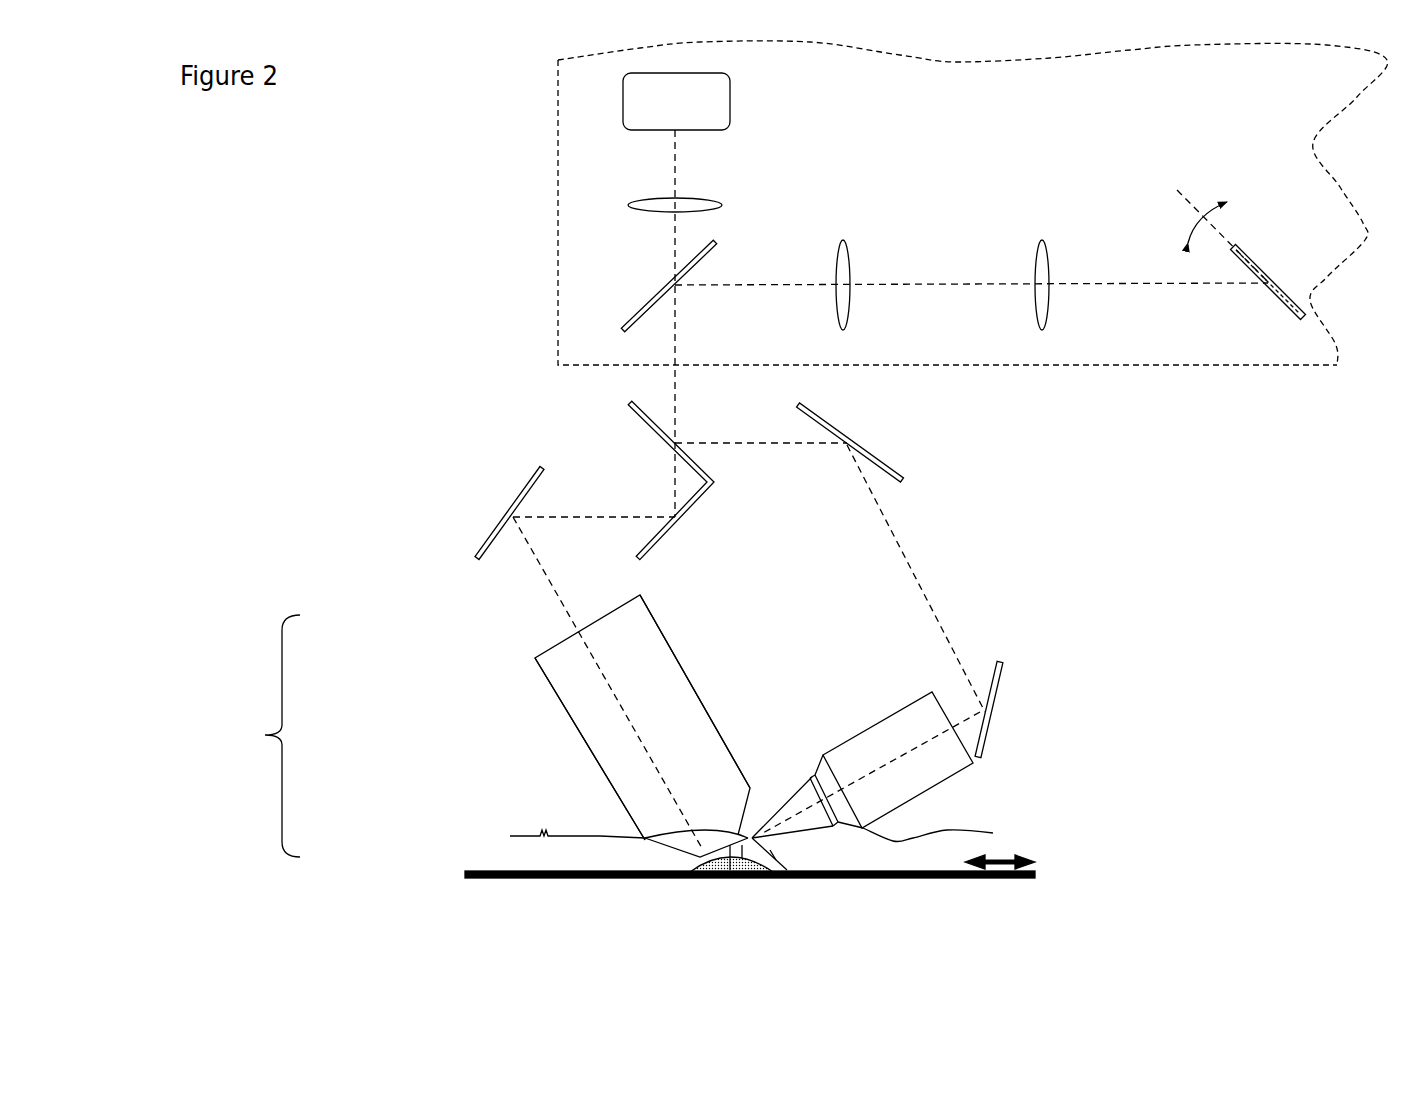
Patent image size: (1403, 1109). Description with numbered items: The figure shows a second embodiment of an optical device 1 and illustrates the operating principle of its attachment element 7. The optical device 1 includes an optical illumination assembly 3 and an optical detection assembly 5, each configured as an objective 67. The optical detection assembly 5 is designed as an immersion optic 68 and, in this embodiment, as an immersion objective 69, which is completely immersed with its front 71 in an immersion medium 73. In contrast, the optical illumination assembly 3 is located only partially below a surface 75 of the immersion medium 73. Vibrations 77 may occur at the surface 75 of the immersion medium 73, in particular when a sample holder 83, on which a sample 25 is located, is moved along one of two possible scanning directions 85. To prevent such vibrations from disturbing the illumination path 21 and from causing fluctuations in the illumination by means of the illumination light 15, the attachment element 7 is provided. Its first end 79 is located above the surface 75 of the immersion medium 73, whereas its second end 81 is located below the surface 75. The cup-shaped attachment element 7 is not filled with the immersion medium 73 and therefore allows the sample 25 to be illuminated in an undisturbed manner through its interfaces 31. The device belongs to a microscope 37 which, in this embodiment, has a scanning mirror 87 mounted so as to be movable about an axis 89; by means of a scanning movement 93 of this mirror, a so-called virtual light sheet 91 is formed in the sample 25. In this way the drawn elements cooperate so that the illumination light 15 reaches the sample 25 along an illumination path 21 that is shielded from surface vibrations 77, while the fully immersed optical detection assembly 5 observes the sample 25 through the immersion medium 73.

The optical device 1 is at (269, 736).
The optical illumination assembly 3 is at (918, 700).
The optical detection assembly 5 is at (565, 658).
The attachment element 7 is at (825, 820).
The illumination light 15 is at (955, 640).
The illumination path 21 is at (923, 742).
The sample 25 is at (697, 865).
The interfaces 31 is at (742, 845).
The microscope 37 is at (558, 200).
The objective 67 is at (663, 683).
The immersion optic 68 is at (520, 735).
The immersion objective 69 is at (596, 691).
The front 71 is at (698, 870).
The immersion medium 73 is at (893, 850).
The surface 75 is at (993, 835).
The vibrations 77 is at (545, 840).
The first end 79 is at (802, 783).
The second end 81 is at (758, 813).
The sample holder 83 is at (1025, 880).
The scanning directions 85 is at (1007, 878).
The scanning mirror 87 is at (1265, 270).
The axis 89 is at (1175, 186).
The virtual light sheet 91 is at (730, 870).
The scanning movement 93 is at (1190, 233).